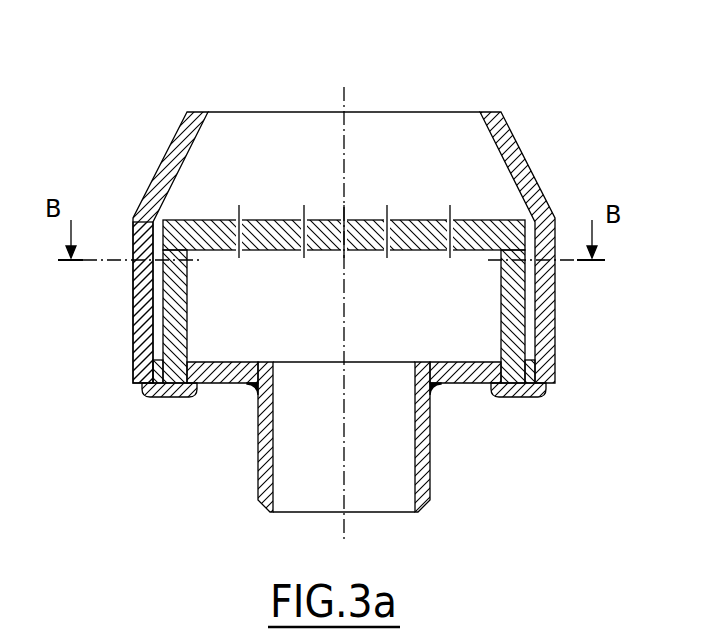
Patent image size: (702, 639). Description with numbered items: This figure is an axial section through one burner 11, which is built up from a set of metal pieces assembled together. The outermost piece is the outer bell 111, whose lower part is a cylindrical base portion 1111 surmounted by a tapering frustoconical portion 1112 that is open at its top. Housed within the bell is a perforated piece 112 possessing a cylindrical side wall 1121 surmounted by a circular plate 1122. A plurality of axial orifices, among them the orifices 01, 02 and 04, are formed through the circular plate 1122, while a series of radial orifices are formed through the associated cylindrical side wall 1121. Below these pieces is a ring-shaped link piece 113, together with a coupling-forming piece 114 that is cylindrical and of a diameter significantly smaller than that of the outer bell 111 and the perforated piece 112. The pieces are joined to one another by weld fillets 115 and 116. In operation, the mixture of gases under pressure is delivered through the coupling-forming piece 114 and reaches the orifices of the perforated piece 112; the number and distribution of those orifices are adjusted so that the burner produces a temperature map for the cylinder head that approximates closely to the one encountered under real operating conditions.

The burner 11 is at (327, 262).
The outer bell 111 is at (327, 294).
The cylindrical base portion 1111 is at (136, 340).
The tapering frustoconical portion 1112 is at (178, 150).
The perforated piece 112 is at (344, 261).
The cylindrical side wall 1121 is at (178, 317).
The circular plate 1122 is at (344, 199).
The axial orifice 01 is at (345, 222).
The axial orifice 02 is at (387, 222).
The axial orifice 04 is at (458, 232).
The ring-shaped link piece 113 is at (215, 387).
The coupling-forming piece 114 is at (427, 470).
The weld fillet 115 is at (433, 387).
The weld fillet 116 is at (523, 392).